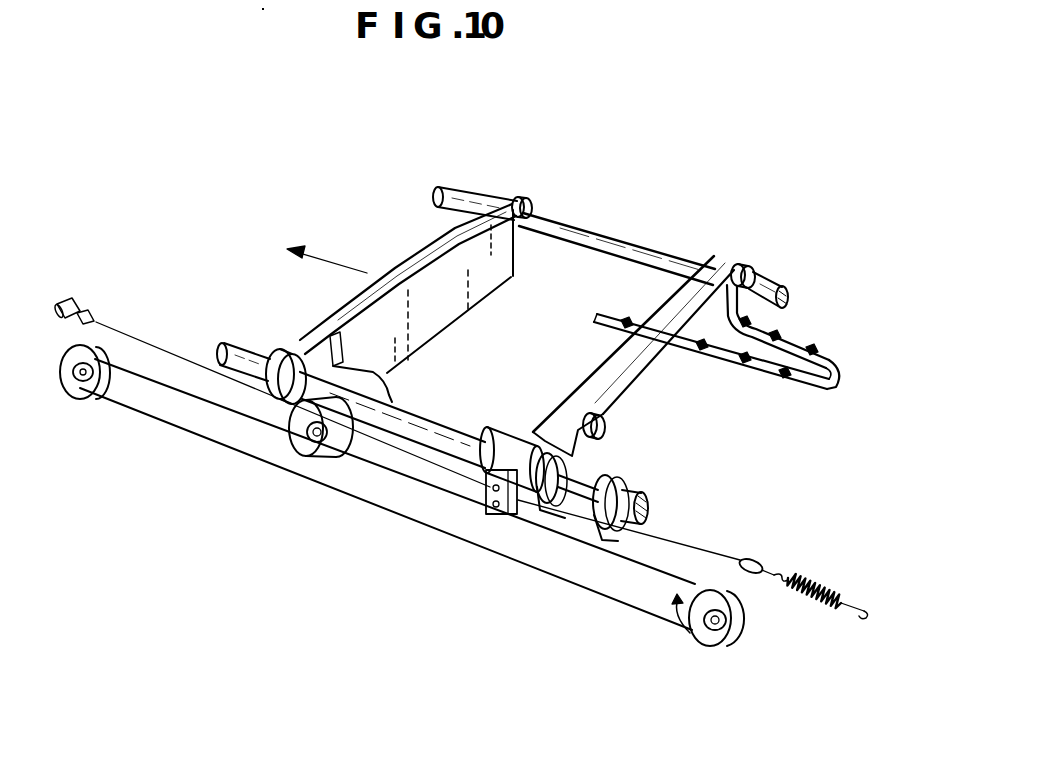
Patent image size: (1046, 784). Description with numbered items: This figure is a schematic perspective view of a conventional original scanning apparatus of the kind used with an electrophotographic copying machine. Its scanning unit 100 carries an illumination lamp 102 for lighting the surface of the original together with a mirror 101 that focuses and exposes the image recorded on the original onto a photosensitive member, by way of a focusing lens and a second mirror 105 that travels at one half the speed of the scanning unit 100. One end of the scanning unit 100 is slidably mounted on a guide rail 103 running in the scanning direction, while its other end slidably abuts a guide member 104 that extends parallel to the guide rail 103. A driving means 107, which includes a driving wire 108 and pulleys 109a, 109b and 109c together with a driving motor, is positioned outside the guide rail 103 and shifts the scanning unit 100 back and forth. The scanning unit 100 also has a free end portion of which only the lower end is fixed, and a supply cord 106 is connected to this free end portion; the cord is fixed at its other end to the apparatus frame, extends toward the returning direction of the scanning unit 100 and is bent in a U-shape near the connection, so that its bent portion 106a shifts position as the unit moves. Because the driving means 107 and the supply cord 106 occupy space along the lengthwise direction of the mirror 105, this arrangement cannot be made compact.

The scanning unit 100 is at (676, 399).
The mirror 101 is at (564, 418).
The illumination lamp 102 is at (603, 432).
The guide rail 103 is at (238, 352).
The guide member 104 is at (481, 193).
The mirror 105 is at (494, 270).
The supply cord 106 is at (807, 347).
The bent portion 106a is at (835, 392).
The driving means 107 is at (479, 530).
The driving wire 108 is at (236, 449).
The pulley 109a is at (84, 382).
The pulley 109b is at (317, 460).
The pulley 109c is at (715, 632).